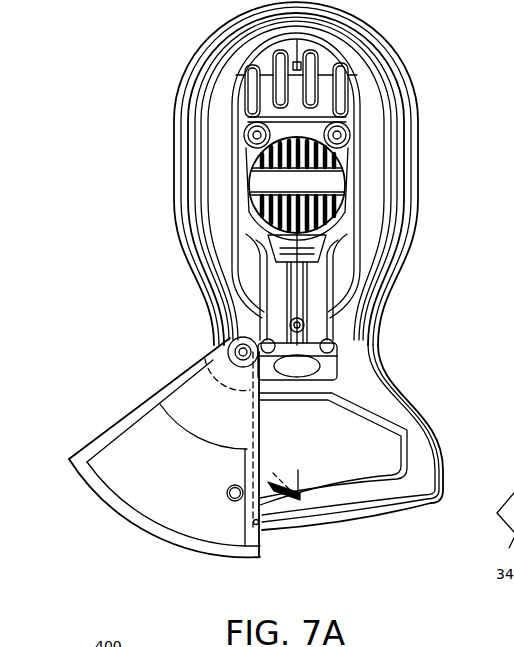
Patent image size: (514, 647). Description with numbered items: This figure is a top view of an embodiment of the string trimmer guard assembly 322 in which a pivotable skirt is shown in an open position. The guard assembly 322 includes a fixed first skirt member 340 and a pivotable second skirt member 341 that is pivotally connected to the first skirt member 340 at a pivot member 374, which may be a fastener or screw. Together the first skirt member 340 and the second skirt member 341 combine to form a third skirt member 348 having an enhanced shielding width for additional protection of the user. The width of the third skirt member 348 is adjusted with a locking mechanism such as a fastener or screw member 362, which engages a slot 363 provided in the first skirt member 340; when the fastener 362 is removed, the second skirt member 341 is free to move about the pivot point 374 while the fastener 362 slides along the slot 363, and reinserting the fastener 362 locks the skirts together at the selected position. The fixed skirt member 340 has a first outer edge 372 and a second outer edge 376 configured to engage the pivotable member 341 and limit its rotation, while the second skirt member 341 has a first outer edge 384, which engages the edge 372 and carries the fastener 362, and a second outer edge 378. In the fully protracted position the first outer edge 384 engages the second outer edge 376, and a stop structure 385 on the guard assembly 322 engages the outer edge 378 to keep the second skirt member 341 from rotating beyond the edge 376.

The string trimmer guard assembly 322 is at (150, 66).
The fixed first skirt member 340 is at (418, 247).
The pivotable second skirt member 341 is at (148, 525).
The third skirt member 348 is at (275, 560).
The fastener 362 is at (229, 501).
The slot 363 is at (285, 497).
The first outer edge 372 is at (447, 462).
The pivot member 374 is at (234, 349).
The second outer edge 376 is at (299, 483).
The second outer edge 378 is at (125, 423).
The first outer edge 384 is at (267, 540).
The stop structure 385 is at (232, 340).